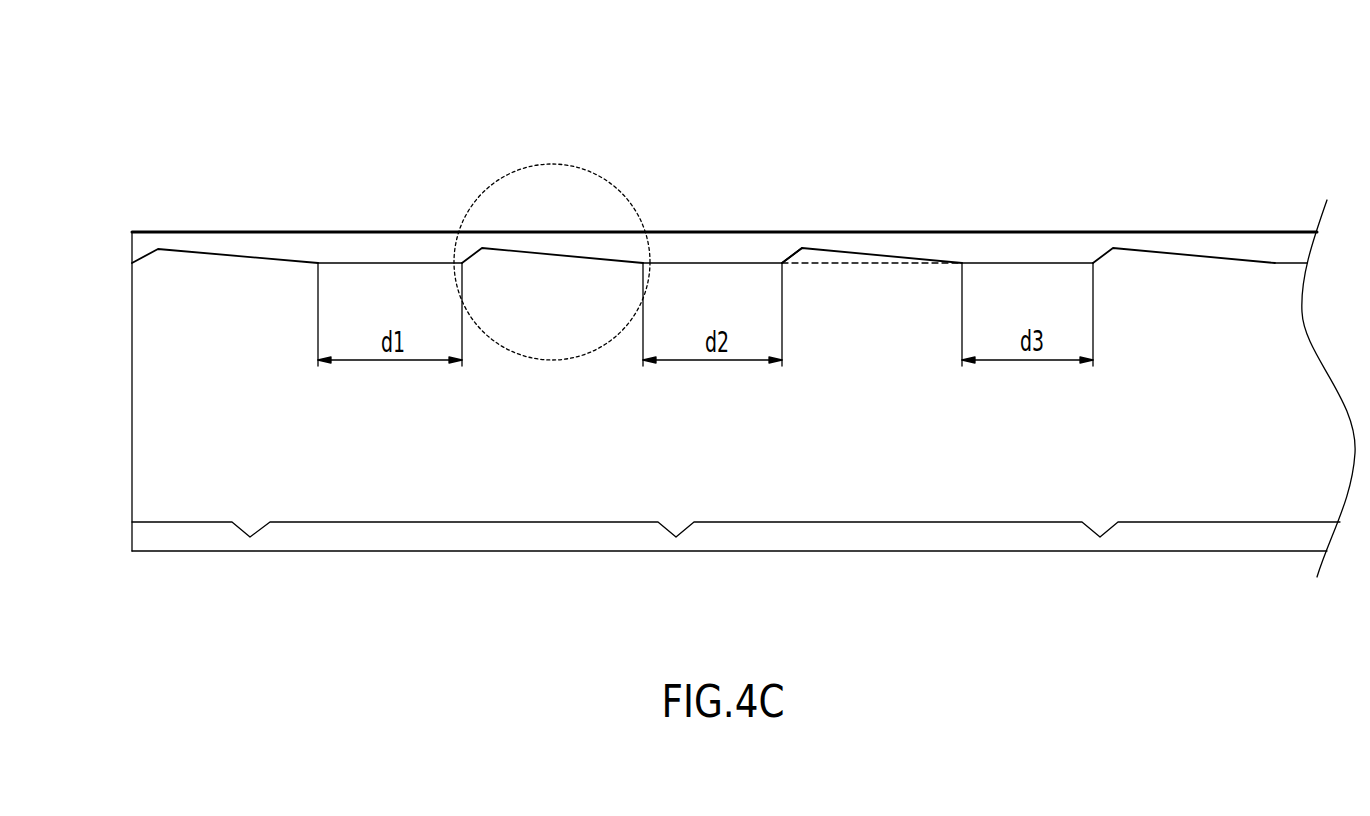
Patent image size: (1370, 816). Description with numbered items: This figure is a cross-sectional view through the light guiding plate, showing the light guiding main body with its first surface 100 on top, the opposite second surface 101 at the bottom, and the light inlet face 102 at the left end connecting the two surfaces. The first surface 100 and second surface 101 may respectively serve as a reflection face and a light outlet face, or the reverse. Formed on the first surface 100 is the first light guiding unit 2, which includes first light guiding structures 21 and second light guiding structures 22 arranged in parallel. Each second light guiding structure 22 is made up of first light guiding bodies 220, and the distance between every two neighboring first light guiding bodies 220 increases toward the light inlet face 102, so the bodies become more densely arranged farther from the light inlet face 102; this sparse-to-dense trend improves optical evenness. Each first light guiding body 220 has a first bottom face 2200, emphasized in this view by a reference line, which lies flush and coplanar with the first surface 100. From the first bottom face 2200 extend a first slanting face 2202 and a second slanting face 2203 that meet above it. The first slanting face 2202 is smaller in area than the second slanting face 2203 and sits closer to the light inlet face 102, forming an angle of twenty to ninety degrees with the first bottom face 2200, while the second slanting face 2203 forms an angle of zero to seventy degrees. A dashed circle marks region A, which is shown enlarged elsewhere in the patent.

The first light guiding unit 2 is at (724, 222).
The first light guiding structure 21 is at (330, 241).
The second light guiding structure 22 is at (703, 240).
The first light guiding body 220 is at (202, 257).
The first bottom face 2200 is at (833, 264).
The first slanting face 2202 is at (782, 262).
The second slanting face 2203 is at (827, 232).
The first surface 100 is at (390, 263).
The second surface 101 is at (358, 522).
The light inlet face 102 is at (131, 298).
The region A is at (622, 190).